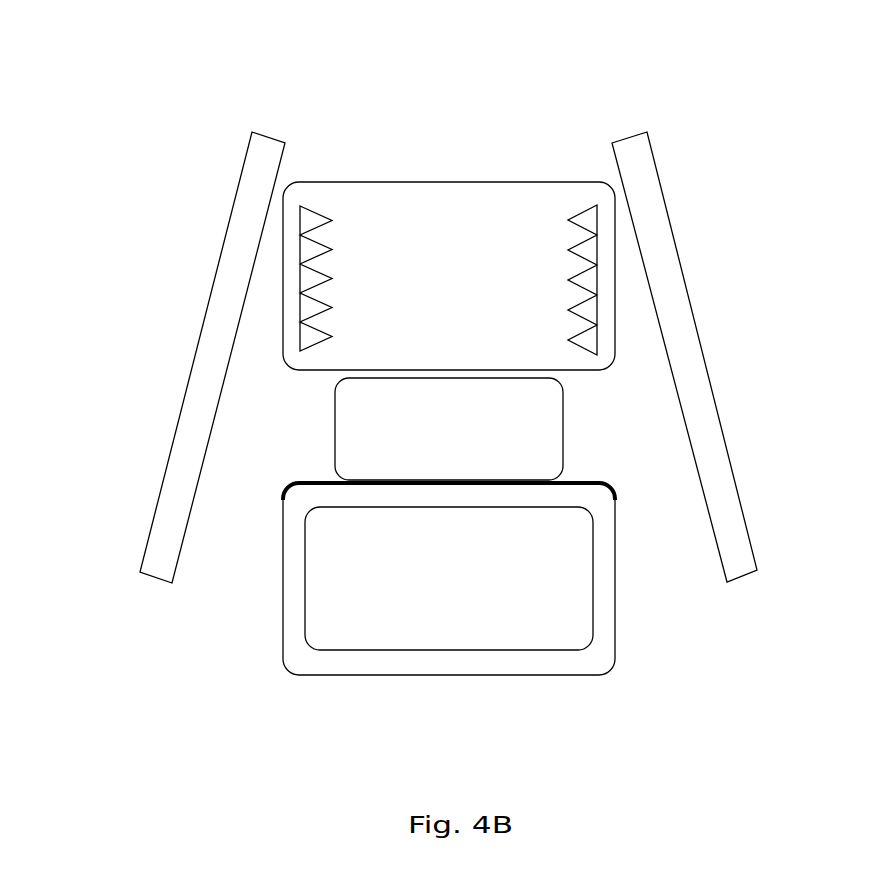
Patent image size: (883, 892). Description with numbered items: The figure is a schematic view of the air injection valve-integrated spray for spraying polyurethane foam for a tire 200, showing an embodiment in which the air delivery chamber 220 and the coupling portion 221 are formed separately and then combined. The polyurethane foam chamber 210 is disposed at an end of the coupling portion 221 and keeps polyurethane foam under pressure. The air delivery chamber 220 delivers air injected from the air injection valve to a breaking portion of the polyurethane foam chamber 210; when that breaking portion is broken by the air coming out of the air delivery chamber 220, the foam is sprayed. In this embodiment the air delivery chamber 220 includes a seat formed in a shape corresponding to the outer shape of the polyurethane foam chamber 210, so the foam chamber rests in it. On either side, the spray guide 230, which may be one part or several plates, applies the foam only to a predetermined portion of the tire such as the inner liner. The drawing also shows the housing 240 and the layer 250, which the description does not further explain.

The air injection valve-integrated spray for spraying polyurethane foam for a tire 200 is at (690, 104).
The polyurethane foam chamber 210 is at (478, 588).
The air delivery chamber 220 is at (333, 438).
The coupling portion 221 is at (432, 228).
The spray guide 230 is at (732, 465).
The cell housing 240 is at (390, 665).
The adhesive layer 250 is at (578, 483).